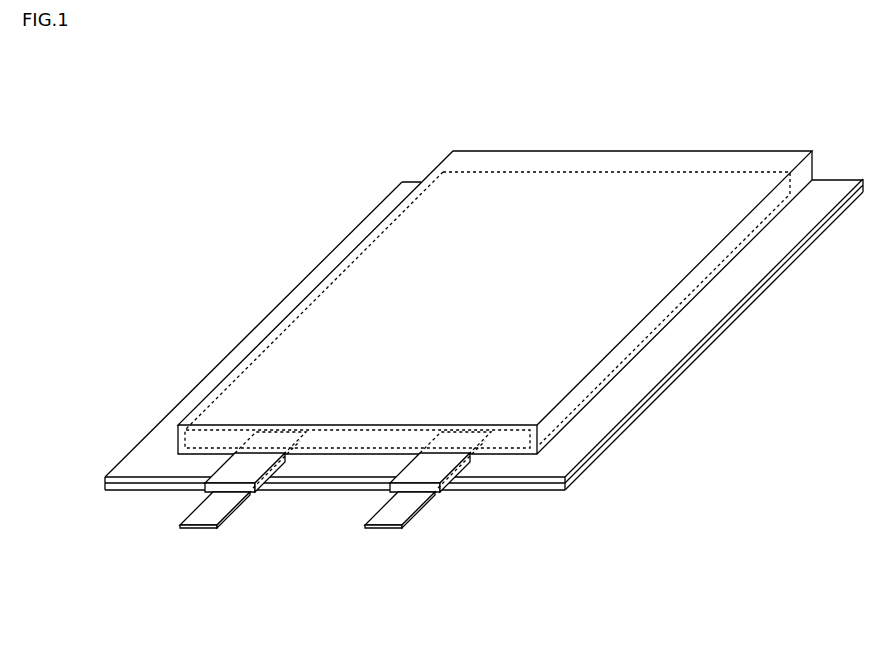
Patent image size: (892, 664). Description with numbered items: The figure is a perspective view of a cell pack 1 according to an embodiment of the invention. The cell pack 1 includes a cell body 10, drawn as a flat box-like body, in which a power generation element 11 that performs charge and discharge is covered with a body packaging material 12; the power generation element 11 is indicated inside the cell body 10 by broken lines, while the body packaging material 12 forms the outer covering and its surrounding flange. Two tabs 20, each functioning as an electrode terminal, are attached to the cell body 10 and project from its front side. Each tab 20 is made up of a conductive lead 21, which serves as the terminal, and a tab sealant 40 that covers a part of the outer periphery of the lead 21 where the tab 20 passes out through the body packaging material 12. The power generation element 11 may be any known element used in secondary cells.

The cell pack 1 is at (332, 222).
The cell body 10 is at (484, 274).
The power generation element 11 is at (478, 197).
The body packaging material 12 is at (717, 313).
The tab 20 is at (236, 530).
The lead 21 is at (210, 516).
The tab sealant 40 is at (242, 479).